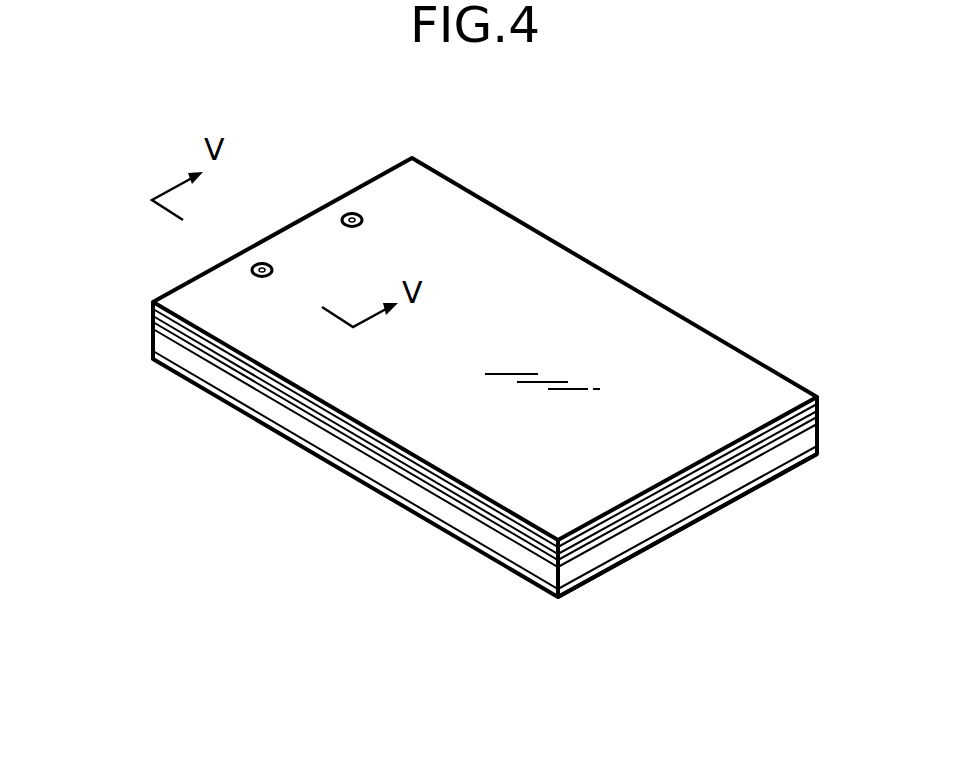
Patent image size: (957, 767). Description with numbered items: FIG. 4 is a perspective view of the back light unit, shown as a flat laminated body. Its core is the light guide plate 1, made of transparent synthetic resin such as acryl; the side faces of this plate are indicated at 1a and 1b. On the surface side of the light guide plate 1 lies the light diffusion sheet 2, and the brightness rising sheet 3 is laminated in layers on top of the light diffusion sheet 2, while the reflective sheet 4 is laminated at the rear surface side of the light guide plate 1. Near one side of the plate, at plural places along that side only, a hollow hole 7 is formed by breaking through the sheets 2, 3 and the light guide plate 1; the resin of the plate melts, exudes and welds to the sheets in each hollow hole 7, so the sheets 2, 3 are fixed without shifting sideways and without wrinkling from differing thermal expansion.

The light guide plate 1 is at (836, 435).
The one end of panel 1a is at (153, 343).
The other end of panel 1b is at (647, 527).
The light diffusion sheet 2 is at (835, 403).
The brightness rising sheet 3 is at (610, 307).
The reflective sheet 4 is at (758, 490).
The hollow hole 7 is at (252, 263).